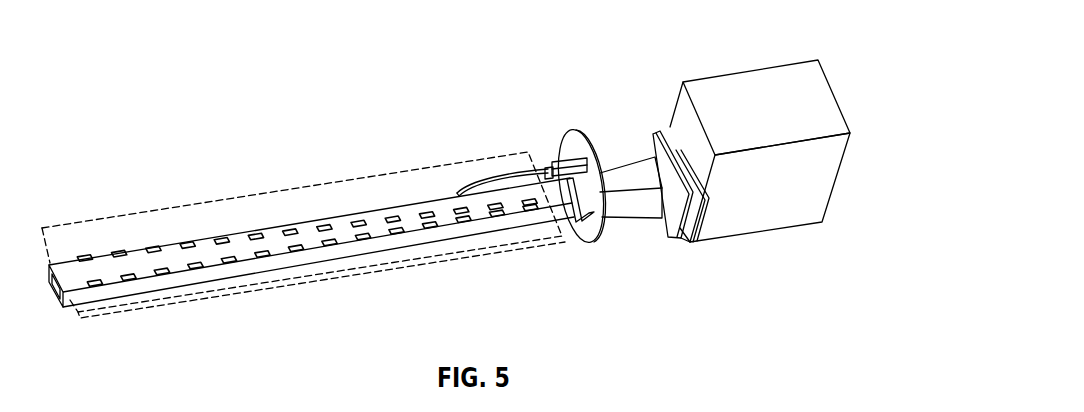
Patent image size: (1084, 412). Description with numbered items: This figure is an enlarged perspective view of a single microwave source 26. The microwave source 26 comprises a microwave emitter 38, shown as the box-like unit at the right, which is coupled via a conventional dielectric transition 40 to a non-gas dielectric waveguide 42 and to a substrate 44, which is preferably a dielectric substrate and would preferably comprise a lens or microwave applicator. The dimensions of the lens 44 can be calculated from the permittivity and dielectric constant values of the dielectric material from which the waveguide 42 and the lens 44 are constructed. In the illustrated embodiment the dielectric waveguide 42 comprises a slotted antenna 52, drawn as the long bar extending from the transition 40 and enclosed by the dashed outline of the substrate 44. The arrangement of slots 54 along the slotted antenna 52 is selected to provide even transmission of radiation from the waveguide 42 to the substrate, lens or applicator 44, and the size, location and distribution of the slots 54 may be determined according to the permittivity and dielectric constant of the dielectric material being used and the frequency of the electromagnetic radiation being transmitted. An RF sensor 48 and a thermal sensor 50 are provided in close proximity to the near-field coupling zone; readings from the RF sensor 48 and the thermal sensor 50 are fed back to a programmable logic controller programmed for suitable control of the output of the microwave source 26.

The microwave source 26 is at (120, 71).
The microwave emitter 38 is at (763, 80).
The dielectric transition 40 is at (637, 193).
The non-gas dielectric waveguide 42 is at (64, 308).
The substrate 44 is at (277, 207).
The RF sensor 48 is at (546, 170).
The thermal sensor 50 is at (487, 180).
The slotted antenna 52 is at (313, 243).
The slots 54 is at (85, 257).